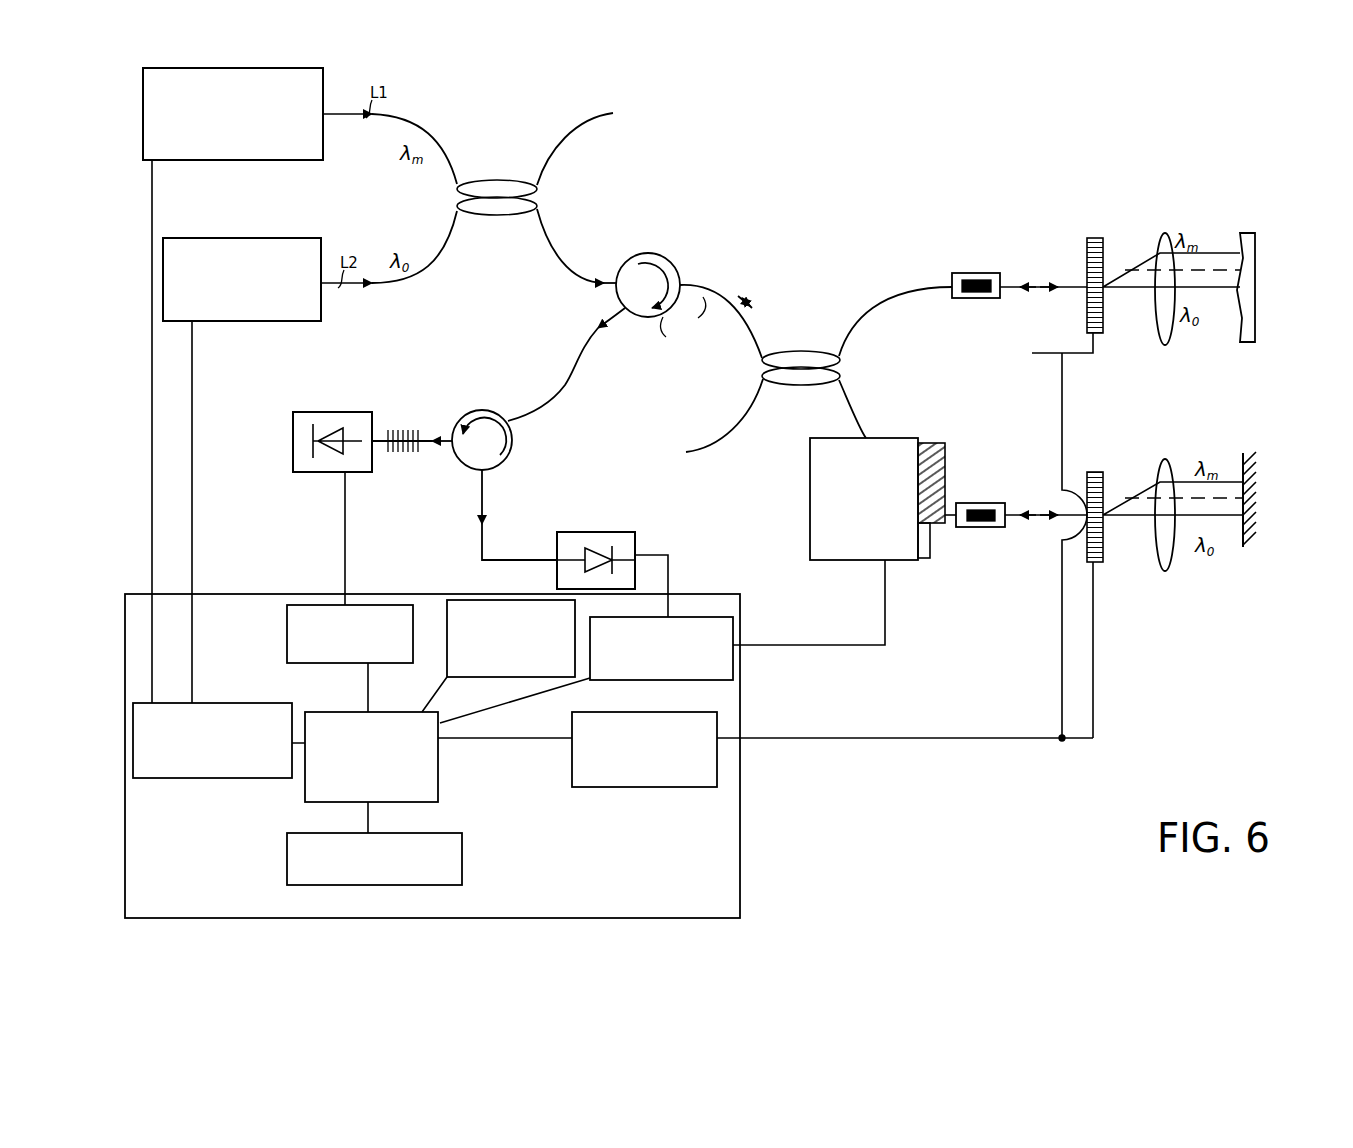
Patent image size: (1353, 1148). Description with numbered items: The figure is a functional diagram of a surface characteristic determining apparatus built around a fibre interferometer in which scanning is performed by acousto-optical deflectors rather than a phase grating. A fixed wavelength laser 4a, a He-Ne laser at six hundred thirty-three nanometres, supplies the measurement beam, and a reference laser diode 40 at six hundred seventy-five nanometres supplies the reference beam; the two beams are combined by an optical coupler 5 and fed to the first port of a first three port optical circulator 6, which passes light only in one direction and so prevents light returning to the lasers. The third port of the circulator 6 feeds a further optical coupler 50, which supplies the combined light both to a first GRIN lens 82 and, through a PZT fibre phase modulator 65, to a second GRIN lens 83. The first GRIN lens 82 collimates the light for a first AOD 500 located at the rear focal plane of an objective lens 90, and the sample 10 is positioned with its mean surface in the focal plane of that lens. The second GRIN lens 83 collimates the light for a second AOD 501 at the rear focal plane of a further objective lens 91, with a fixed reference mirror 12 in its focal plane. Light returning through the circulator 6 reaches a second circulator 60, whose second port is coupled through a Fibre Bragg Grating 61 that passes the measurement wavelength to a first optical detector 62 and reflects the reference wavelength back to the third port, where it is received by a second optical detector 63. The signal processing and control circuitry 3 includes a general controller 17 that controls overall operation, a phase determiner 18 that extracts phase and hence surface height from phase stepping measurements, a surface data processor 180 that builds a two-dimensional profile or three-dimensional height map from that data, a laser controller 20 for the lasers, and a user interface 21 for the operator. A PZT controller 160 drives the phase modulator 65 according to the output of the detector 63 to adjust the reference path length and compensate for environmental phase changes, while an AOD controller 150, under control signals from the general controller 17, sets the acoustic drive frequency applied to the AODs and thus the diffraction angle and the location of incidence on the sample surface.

The fixed wavelength laser 4a is at (231, 167).
The reference laser diode 40 is at (241, 250).
The optical coupler 5 is at (522, 193).
The first three port optical circulator 6 is at (655, 291).
The further optical coupler 50 is at (826, 368).
The second circulator 60 is at (468, 470).
The Fibre Bragg Grating 61 is at (398, 456).
The first optical detector 62 is at (330, 412).
The second optical detector 63 is at (635, 532).
The PZT fibre phase modulator 65 is at (868, 440).
The first GRIN lens 82 is at (962, 299).
The second GRIN lens 83 is at (976, 503).
The first AOD 500 is at (1087, 305).
The second AOD 501 is at (1103, 528).
The objective lens 90 is at (1164, 240).
The further objective lens 91 is at (1164, 462).
The sample 10 is at (1242, 345).
The reference mirror 12 is at (1241, 548).
The signal processing and control circuitry 3 is at (740, 856).
The laser controller 20 is at (214, 703).
The phase determiner 18 is at (287, 626).
The general controller 17 is at (386, 712).
The surface data processor 180 is at (478, 677).
The PZT controller 160 is at (620, 680).
The AOD controller 150 is at (618, 787).
The user interface 21 is at (462, 858).